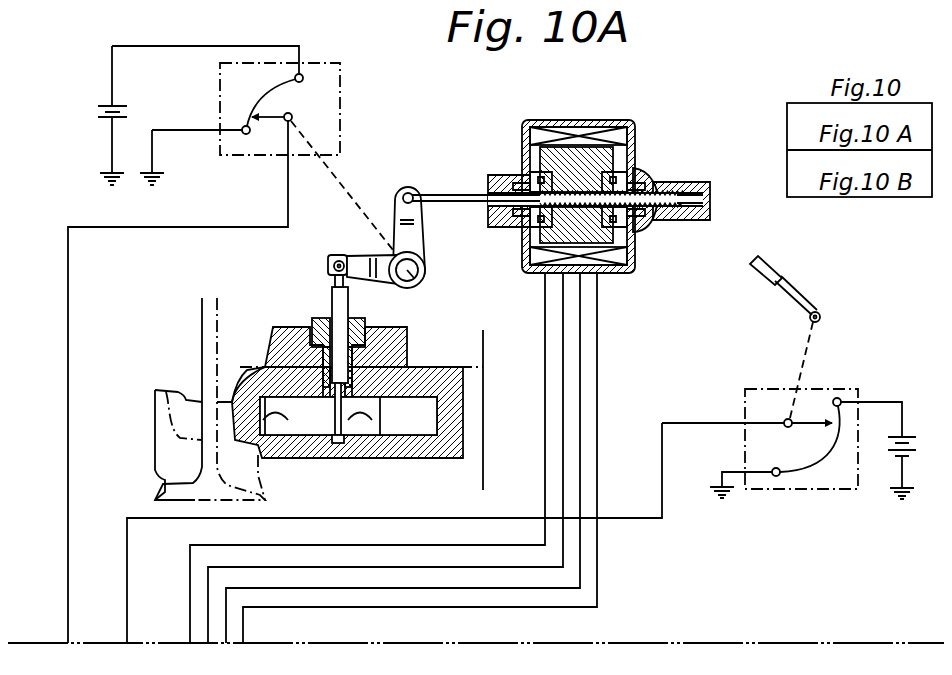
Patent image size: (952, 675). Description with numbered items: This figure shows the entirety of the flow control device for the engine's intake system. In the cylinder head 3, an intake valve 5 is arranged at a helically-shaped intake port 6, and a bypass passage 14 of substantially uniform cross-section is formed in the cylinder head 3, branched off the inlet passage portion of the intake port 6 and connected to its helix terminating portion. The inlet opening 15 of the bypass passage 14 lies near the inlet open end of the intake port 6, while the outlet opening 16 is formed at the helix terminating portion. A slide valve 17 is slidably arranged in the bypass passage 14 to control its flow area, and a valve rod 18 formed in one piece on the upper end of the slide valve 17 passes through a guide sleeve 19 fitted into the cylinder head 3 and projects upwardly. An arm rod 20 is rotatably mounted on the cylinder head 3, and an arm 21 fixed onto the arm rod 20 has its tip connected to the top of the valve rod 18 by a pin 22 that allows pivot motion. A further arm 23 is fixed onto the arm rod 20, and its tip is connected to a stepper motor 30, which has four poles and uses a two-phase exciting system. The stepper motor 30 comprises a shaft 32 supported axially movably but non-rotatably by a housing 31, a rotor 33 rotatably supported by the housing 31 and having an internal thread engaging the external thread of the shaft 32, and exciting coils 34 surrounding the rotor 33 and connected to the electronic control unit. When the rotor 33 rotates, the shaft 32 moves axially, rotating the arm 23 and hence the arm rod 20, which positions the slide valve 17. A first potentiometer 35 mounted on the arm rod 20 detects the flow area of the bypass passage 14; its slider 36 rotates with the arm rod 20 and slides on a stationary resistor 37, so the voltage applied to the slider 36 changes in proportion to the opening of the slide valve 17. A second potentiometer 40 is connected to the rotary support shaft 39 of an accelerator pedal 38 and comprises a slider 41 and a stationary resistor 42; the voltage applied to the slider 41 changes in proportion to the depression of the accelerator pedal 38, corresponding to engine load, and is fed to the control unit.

The cylinder head 3 is at (290, 327).
The intake valve 5 is at (166, 390).
The intake port 6 is at (476, 368).
The bypass passage 14 is at (314, 420).
The inlet opening 15 is at (418, 422).
The outlet opening 16 is at (290, 417).
The slide valve 17 is at (347, 420).
The valve rod 18 is at (332, 302).
The guide sleeve 19 is at (367, 322).
The arm rod 20 is at (420, 285).
The arm 21 is at (375, 254).
The pin 22 is at (327, 263).
The arm 23 is at (420, 238).
The stepper motor 30 is at (599, 192).
The housing 31 is at (577, 120).
The shaft 32 is at (462, 193).
The rotor 33 is at (606, 152).
The exciting coil 34 is at (612, 257).
The first potentiometer 35 is at (352, 90).
The slider 36 is at (278, 119).
The stationary resistor 37 is at (253, 98).
The accelerator pedal 38 is at (792, 290).
The rotary support shaft 39 is at (828, 318).
The second potentiometer 40 is at (753, 385).
The slider 41 is at (815, 420).
The stationary resistor 42 is at (827, 457).